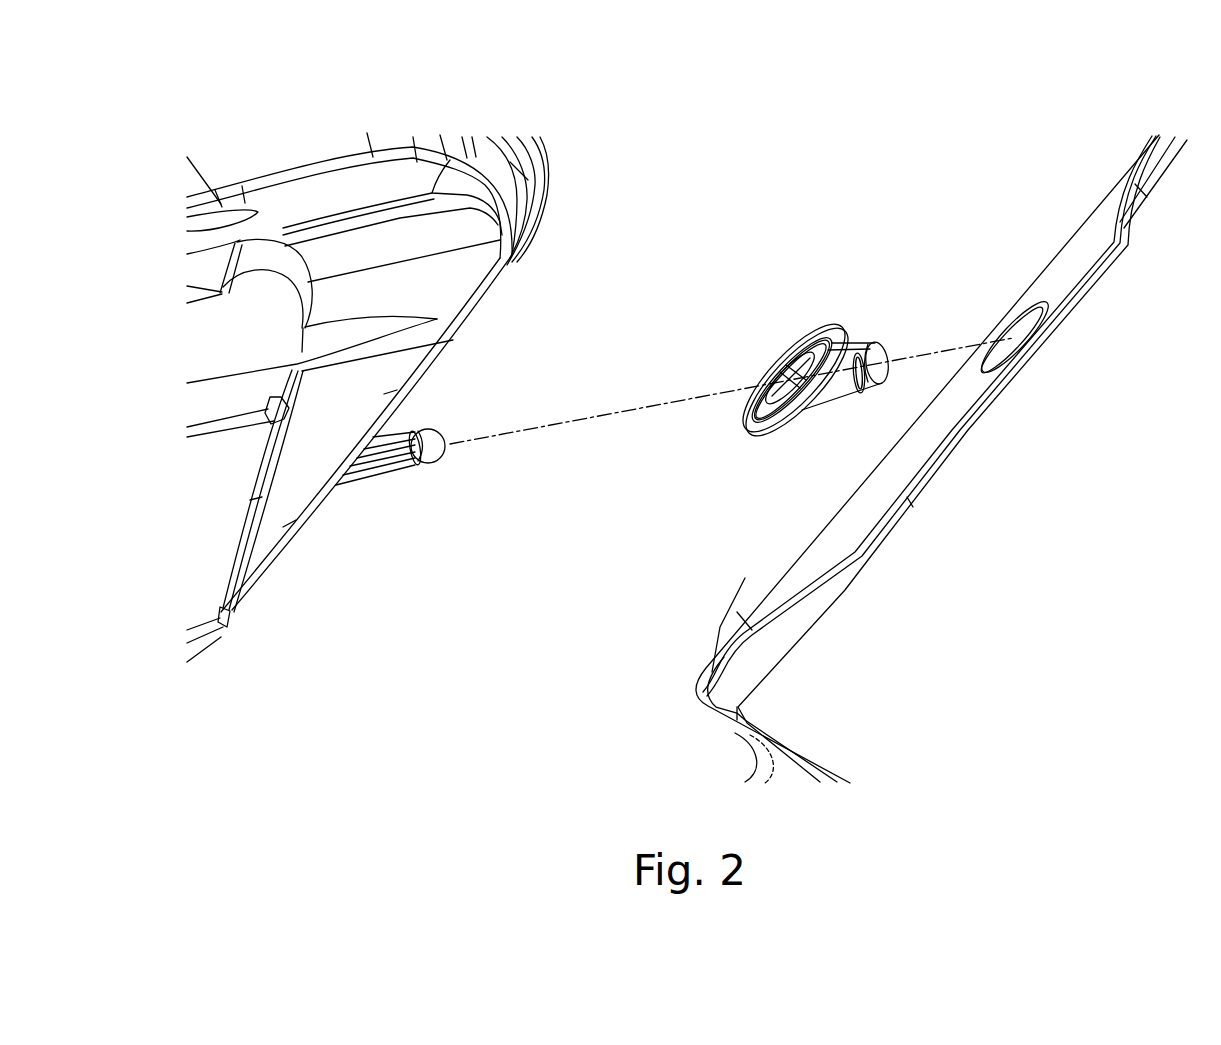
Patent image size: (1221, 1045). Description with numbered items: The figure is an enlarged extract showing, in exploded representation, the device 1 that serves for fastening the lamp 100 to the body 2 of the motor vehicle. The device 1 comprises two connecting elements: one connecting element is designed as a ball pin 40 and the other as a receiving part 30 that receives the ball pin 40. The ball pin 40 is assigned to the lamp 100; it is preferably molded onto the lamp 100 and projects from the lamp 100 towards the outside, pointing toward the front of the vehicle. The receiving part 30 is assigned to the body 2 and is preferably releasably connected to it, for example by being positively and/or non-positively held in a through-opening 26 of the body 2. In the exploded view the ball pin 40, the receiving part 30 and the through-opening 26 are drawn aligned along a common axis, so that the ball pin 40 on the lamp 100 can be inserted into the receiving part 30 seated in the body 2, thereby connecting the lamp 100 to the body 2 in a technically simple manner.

The device 1 is at (737, 453).
The body 2 is at (1087, 240).
The through-opening 26 is at (1028, 323).
The receiving part 30 is at (823, 320).
The ball pin 40 is at (418, 415).
The lamp 100 is at (348, 247).